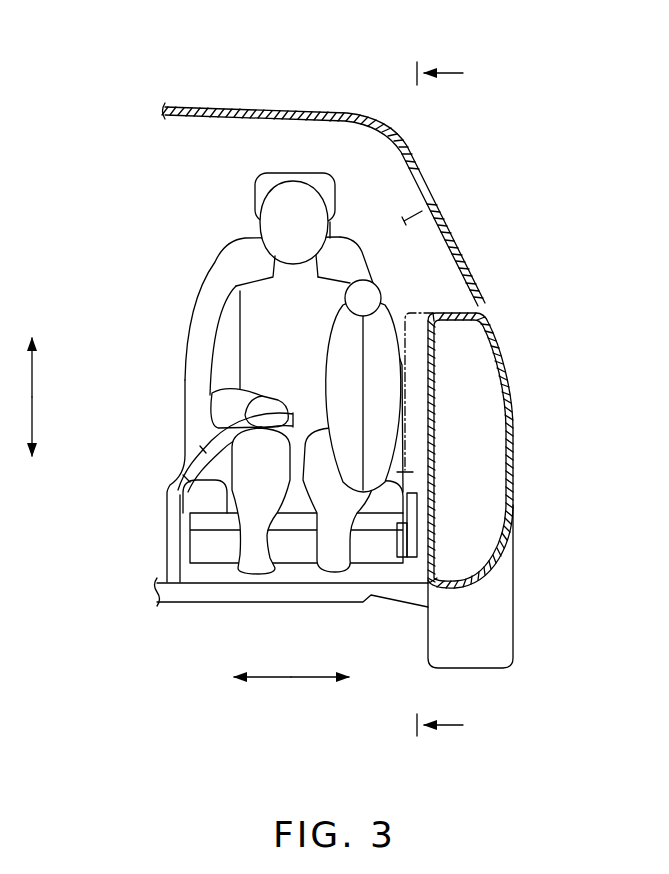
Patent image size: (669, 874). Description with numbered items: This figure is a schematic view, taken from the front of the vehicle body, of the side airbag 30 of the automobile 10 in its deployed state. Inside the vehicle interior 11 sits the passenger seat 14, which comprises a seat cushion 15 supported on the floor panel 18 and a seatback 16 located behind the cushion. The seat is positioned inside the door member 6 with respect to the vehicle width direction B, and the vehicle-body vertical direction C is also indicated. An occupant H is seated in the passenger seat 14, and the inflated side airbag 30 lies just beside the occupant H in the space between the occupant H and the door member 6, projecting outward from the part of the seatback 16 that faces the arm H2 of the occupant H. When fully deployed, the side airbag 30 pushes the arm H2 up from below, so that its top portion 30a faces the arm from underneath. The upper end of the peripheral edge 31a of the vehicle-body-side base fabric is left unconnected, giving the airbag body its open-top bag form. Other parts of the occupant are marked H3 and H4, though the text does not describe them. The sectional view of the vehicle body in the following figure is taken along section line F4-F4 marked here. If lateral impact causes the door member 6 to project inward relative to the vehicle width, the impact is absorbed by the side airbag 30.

The door member 6 is at (407, 343).
The automobile 10 is at (224, 99).
The vehicle interior 11 is at (163, 157).
The passenger seat 14 is at (345, 231).
The seat cushion 15 is at (200, 520).
The seatback 16 is at (207, 297).
The floor panel 18 is at (312, 590).
The side airbag 30 is at (384, 341).
The top portion of the side airbag 30a is at (390, 310).
The peripheral edge of the first base fabric 31a is at (363, 450).
The occupant H is at (257, 183).
The arm of the occupant H2 is at (380, 295).
The occupant chest H3 is at (280, 313).
The occupant upper arm H4 is at (368, 291).
The vehicle-body vertical direction C is at (35, 395).
The vehicle width direction B is at (290, 680).
The section line F4- F4 is at (456, 399).